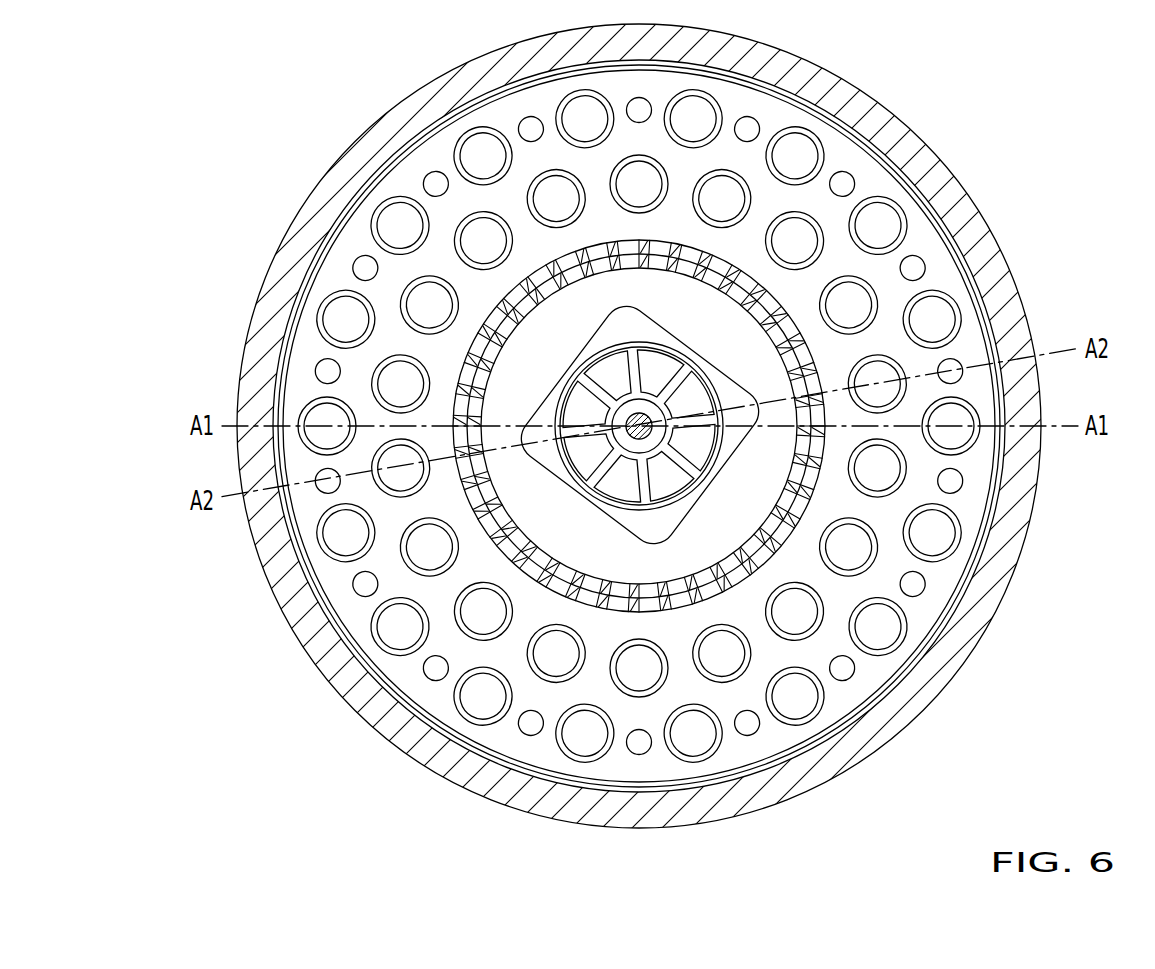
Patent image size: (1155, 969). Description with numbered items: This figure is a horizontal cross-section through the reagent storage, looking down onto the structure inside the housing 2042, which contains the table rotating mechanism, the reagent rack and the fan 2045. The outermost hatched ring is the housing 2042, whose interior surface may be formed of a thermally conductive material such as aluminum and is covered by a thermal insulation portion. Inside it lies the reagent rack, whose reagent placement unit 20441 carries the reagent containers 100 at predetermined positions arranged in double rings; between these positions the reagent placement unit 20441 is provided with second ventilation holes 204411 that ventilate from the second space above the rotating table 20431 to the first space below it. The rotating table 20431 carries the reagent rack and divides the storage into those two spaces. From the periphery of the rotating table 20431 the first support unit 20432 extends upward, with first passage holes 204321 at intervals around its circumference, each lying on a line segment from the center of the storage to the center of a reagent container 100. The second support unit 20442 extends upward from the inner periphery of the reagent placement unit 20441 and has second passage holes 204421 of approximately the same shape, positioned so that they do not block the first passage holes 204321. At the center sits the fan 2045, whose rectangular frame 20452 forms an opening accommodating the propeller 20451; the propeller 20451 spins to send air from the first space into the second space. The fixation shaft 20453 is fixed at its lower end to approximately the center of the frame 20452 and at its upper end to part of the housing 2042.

The reagent container 100 is at (810, 127).
The housing 2042 is at (803, 65).
The fan 2045 is at (408, 872).
The rotating table 20431 is at (755, 503).
The first support unit 20432 is at (818, 383).
The first passage hole 204321 is at (803, 450).
The reagent placement unit 20441 is at (870, 163).
The second ventilation hole 204411 is at (922, 260).
The second support unit 20442 is at (460, 467).
The second passage hole 204421 is at (357, 587).
The propeller 20451 is at (602, 483).
The frame 20452 is at (657, 520).
The fixation shaft 20453 is at (651, 436).